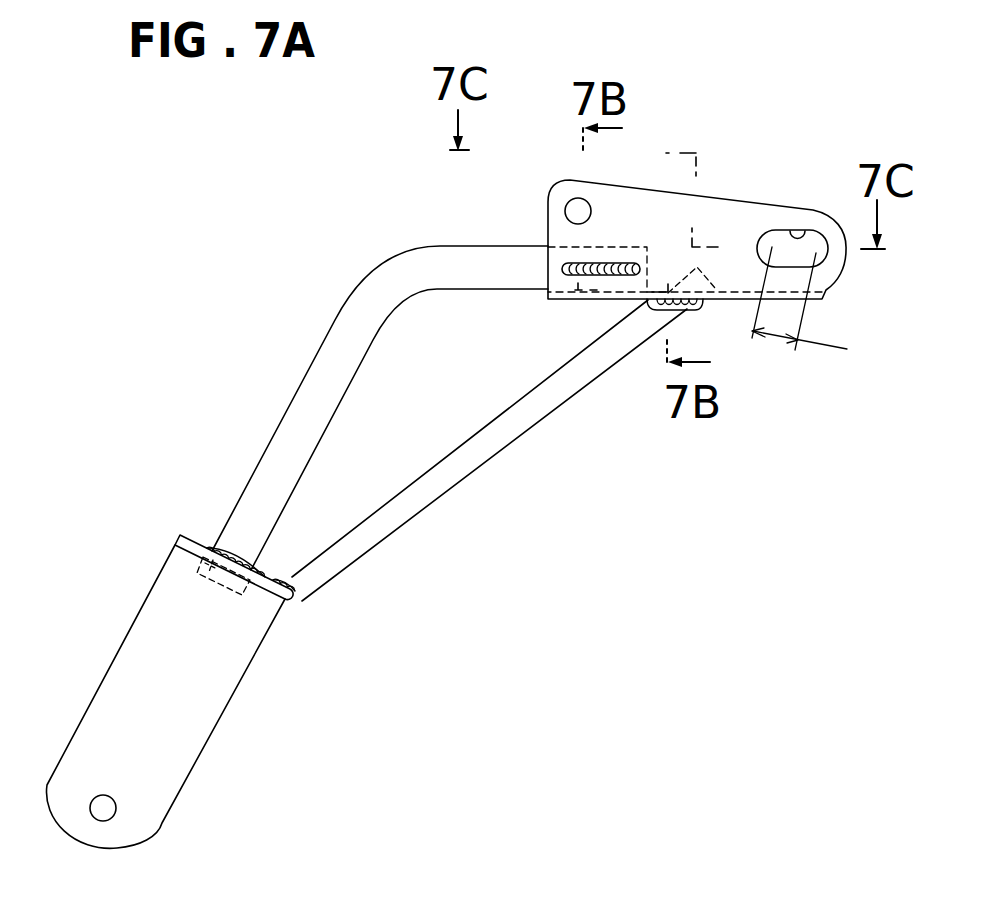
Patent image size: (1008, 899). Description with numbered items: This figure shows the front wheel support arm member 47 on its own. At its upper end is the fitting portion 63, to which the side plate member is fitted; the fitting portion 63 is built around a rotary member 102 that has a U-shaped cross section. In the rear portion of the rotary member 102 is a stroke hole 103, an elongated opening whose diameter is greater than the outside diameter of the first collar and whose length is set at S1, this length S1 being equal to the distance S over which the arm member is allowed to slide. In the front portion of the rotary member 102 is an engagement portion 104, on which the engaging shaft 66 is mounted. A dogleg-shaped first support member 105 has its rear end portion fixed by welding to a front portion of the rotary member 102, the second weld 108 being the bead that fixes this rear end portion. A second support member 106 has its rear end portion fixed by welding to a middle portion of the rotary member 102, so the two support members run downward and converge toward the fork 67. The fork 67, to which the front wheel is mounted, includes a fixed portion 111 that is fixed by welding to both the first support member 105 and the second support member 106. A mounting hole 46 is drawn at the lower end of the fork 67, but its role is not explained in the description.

The front wheel support arm member 47 is at (281, 245).
The fitting portion 63 is at (560, 183).
The engaging shaft 66 is at (548, 211).
The engagement portion 104 is at (607, 208).
The rotary member 102 is at (731, 214).
The stroke hole 103 is at (800, 232).
The length of stroke hole S1 is at (799, 298).
The second weld 108 is at (566, 268).
The first support member 105 is at (326, 334).
The second support member 106 is at (500, 449).
The fixed portion 111 is at (197, 546).
The fork 67 is at (149, 595).
The mounting hole 46 is at (160, 822).